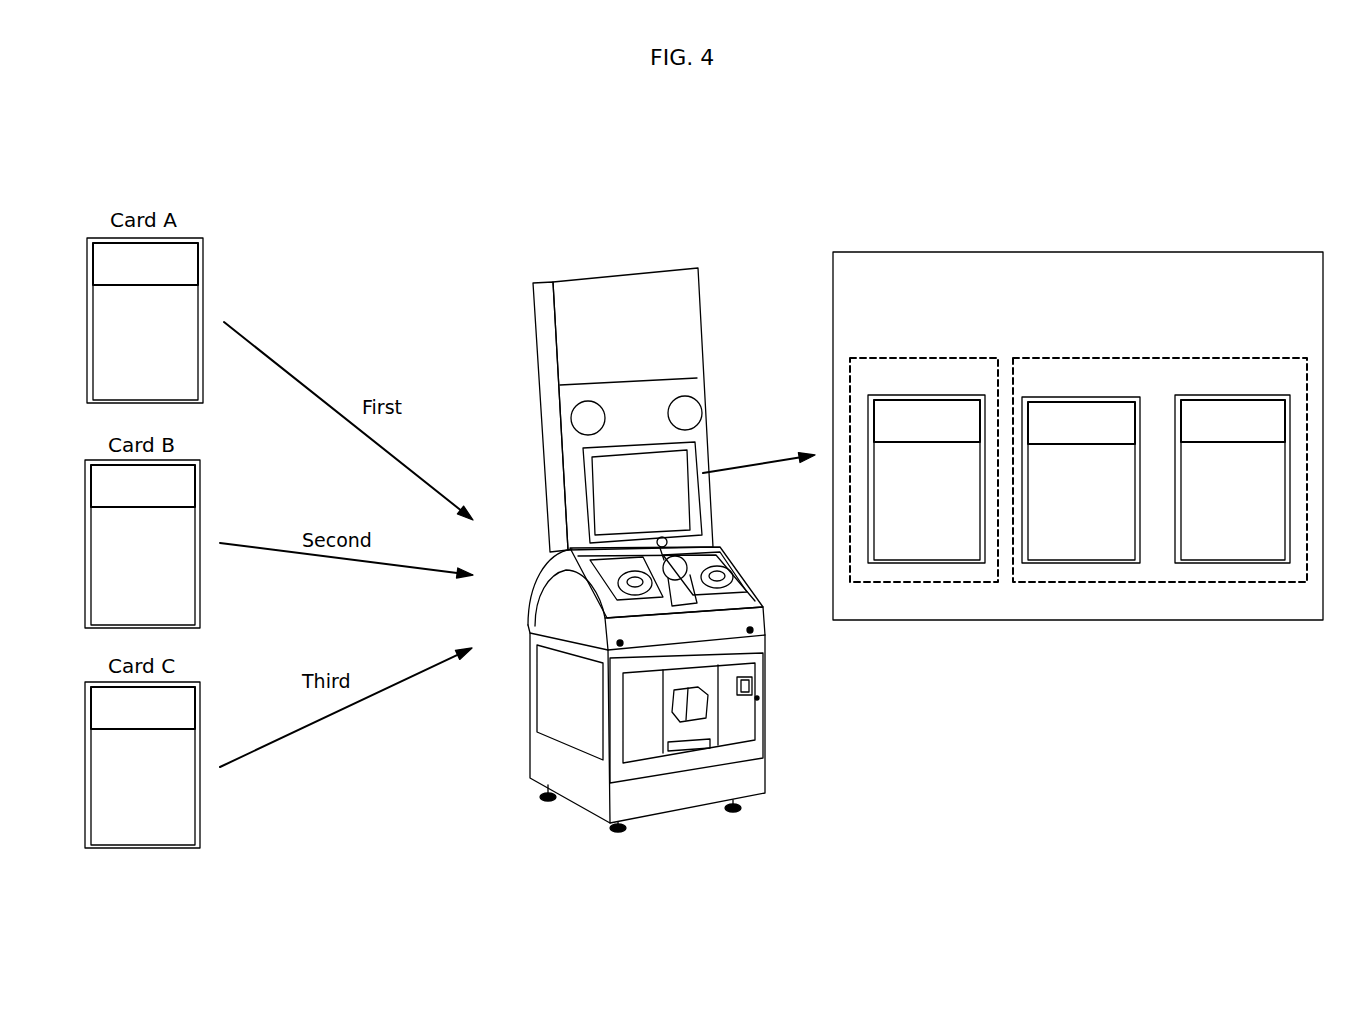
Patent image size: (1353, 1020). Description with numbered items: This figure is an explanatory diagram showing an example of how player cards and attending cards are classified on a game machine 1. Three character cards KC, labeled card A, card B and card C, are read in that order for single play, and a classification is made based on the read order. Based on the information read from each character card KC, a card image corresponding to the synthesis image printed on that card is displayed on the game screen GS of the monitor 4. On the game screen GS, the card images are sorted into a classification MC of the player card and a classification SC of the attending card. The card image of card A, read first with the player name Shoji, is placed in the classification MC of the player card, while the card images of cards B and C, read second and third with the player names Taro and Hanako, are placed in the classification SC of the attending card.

The game machine 1 is at (698, 240).
The monitor 4 is at (704, 450).
The character card KC is at (203, 266).
The game screen GS is at (1065, 238).
The classification of the player card MC is at (912, 357).
The classification of the attending card SC is at (1198, 357).